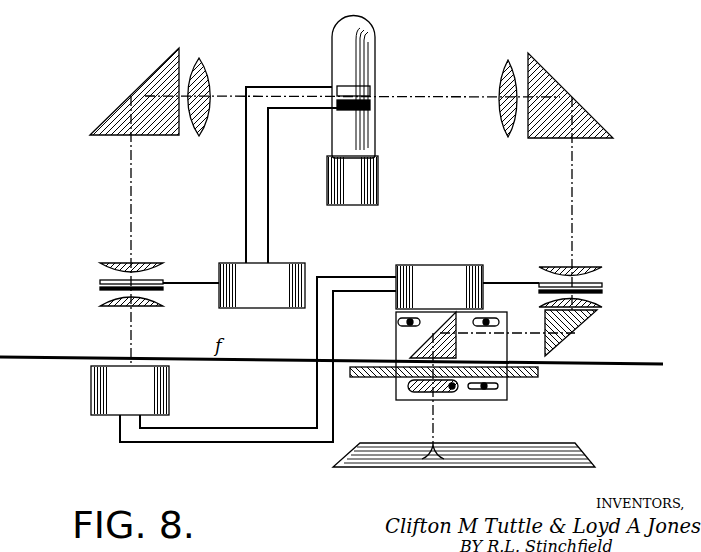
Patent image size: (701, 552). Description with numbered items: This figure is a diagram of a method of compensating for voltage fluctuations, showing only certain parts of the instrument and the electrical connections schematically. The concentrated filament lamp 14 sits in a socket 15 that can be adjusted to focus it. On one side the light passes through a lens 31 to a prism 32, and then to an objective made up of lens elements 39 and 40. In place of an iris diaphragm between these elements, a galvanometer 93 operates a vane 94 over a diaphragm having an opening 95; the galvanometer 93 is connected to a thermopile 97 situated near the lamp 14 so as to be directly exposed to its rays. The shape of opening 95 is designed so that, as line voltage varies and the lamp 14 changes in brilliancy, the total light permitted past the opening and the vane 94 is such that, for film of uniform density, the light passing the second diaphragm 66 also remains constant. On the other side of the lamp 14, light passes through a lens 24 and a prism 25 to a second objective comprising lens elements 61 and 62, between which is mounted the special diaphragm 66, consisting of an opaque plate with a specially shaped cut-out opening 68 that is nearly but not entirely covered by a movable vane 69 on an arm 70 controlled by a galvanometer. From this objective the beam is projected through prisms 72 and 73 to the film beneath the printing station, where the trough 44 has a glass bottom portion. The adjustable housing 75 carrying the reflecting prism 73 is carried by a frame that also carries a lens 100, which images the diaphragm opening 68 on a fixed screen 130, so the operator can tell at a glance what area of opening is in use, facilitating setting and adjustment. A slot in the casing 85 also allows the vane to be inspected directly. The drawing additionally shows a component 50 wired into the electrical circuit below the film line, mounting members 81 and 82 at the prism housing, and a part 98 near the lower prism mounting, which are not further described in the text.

The concentrated filament lamp 14 is at (347, 58).
The socket 15 is at (357, 180).
The lens 24 is at (509, 68).
The prism 25 is at (553, 88).
The lens 31 is at (204, 68).
The prism 32 is at (150, 84).
The lens element 39 is at (118, 262).
The lens element 40 is at (130, 310).
The trough 44 is at (378, 377).
The photoelectric cell 50 is at (145, 388).
The lens element 61 is at (598, 270).
The lens element 62 is at (604, 304).
The special diaphragm 66 is at (604, 292).
The cut-out opening 68 is at (444, 462).
The movable vane 69 is at (604, 285).
The arm 70 is at (513, 283).
The prism 72 is at (590, 320).
The reflecting prism 73 is at (425, 340).
The adjustable housing 75 is at (404, 323).
The pivot 81 is at (488, 320).
The pivot 82 is at (500, 322).
The casing 85 is at (443, 265).
The galvanometer 93 is at (254, 302).
The vane 94 is at (191, 272).
The diaphragm opening 95 is at (125, 289).
The thermopile 97 is at (372, 88).
The arm 98 is at (506, 385).
The lens 100 is at (429, 393).
The fixed screen 130 is at (526, 455).